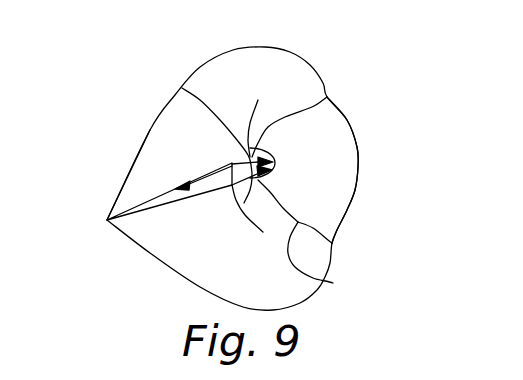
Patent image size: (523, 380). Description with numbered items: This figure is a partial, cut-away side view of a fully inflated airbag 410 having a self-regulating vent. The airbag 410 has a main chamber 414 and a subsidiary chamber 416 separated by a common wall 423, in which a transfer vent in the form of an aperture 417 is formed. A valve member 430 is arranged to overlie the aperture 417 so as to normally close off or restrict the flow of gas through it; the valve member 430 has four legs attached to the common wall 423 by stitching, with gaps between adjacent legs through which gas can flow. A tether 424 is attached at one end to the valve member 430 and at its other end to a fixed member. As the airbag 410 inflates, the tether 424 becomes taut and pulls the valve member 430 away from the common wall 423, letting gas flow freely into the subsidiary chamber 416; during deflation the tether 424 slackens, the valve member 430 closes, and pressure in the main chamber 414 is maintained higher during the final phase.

The airbag 410 is at (117, 61).
The valve member 430 is at (182, 88).
The main chamber 414 is at (163, 126).
The tether 424 is at (145, 197).
The aperture 417 is at (252, 152).
The subsidiary chamber 416 is at (340, 142).
The common wall 423 is at (333, 283).